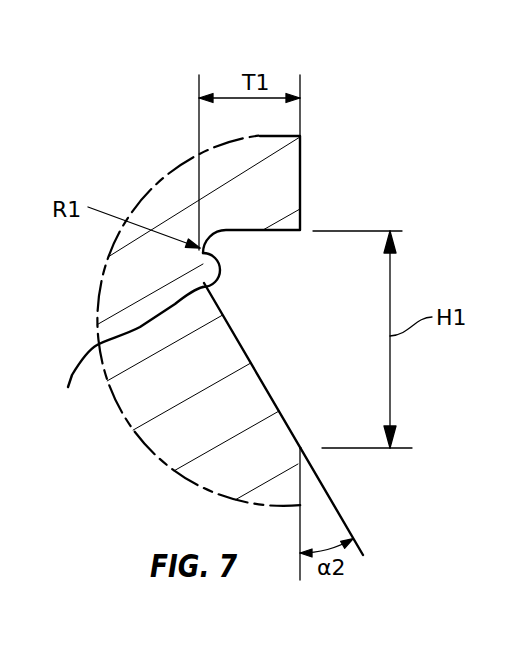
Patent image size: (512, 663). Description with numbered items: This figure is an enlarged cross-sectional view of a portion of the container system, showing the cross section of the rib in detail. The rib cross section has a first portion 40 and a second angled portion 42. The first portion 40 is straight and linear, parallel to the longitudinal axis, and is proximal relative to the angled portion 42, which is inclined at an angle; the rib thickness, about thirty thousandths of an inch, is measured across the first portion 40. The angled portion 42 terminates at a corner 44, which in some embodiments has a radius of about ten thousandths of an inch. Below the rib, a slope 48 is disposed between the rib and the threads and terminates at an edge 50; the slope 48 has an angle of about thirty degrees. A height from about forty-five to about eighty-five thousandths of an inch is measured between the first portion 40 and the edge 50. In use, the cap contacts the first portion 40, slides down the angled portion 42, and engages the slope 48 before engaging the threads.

The first portion 40 is at (300, 175).
The second angled portion 42 is at (203, 250).
The corner 44 is at (128, 351).
The slope 48 is at (257, 372).
The edge 50 is at (300, 448).